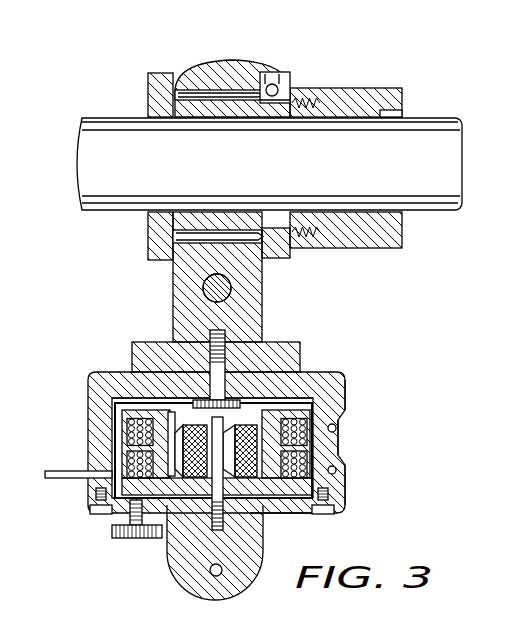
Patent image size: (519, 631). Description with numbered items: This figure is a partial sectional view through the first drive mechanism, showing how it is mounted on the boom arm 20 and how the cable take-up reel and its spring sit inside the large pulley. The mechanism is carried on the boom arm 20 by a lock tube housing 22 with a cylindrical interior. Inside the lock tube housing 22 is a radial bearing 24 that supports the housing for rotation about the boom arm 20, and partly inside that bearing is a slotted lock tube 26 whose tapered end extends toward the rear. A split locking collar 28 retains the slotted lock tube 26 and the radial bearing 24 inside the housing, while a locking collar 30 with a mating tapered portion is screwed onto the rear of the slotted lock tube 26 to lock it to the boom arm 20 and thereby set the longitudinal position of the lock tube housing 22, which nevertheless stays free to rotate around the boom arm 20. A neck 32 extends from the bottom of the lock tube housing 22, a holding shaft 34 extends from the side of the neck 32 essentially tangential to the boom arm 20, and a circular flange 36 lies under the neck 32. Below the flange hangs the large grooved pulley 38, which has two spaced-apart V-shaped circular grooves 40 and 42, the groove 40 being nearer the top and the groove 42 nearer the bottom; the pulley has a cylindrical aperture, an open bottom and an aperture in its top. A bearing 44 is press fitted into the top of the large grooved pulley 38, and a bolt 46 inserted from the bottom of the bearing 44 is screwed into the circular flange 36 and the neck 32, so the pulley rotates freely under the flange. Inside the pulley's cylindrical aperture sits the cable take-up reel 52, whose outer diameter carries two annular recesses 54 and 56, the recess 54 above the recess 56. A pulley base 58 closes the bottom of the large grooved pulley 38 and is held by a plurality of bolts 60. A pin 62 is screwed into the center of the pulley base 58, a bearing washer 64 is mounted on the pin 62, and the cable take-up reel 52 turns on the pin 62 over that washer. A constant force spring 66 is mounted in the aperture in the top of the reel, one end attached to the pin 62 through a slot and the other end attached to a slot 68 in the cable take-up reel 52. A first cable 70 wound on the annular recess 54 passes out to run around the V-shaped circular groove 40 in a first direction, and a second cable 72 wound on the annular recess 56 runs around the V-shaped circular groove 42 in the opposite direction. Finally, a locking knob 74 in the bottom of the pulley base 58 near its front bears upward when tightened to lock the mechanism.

The boom arm 20 is at (118, 207).
The lock tube housing 22 is at (258, 66).
The radial bearing 24 is at (180, 96).
The slotted lock tube 26 is at (317, 238).
The split locking collar 28 is at (277, 258).
The locking collar 30 is at (385, 238).
The neck 32 is at (262, 313).
The holding shaft 34 is at (203, 292).
The circular flange 36 is at (296, 352).
The large grooved pulley 38 is at (345, 384).
The V-shaped circular groove 40 is at (342, 446).
The V-shaped circular groove 42 is at (343, 490).
The bearing 44 is at (175, 385).
The bolt 46 is at (206, 368).
The cable take-up reel 52 is at (275, 513).
The annular recess 54 is at (342, 408).
The annular recess 56 is at (336, 470).
The pulley base 58 is at (174, 580).
The bolts 60 is at (105, 517).
The pin 62 is at (222, 515).
The bearing washer 64 is at (170, 513).
The constant force spring 66 is at (262, 410).
The slot 68 is at (96, 396).
The first cable 70 is at (336, 428).
The second cable 72 is at (75, 479).
The locking knob 74 is at (116, 538).